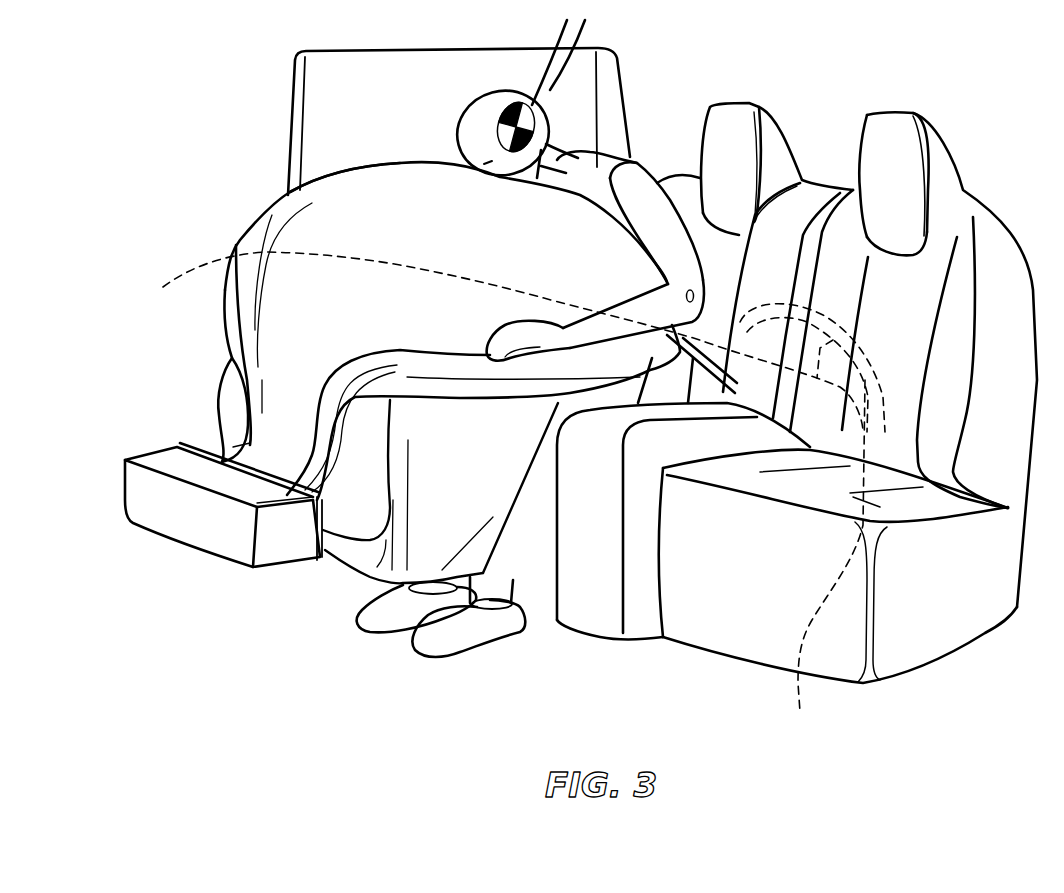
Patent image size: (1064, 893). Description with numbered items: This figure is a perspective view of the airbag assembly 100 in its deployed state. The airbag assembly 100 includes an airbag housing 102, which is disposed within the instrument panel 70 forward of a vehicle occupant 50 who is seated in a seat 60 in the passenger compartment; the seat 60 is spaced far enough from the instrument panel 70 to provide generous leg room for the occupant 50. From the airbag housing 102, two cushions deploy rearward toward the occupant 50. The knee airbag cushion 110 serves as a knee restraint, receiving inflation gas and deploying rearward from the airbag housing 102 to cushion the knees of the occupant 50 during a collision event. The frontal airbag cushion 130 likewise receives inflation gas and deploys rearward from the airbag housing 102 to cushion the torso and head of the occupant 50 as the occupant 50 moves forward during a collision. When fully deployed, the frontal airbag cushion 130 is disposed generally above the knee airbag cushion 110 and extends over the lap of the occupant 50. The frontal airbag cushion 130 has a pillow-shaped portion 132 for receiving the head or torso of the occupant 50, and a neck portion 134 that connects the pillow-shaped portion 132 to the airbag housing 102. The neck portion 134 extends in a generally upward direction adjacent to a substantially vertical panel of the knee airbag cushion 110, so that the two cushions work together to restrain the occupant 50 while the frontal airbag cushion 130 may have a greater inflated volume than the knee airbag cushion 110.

The airbag assembly 100 is at (373, 345).
The frontal airbag cushion 130 is at (391, 317).
The pillow-shaped portion 132 is at (365, 174).
The neck portion 134 is at (270, 428).
The airbag housing 102 is at (208, 527).
The knee airbag cushion 110 is at (491, 472).
The vehicle occupant 50 is at (607, 167).
The seat 60 is at (748, 171).
The instrument panel 70 is at (799, 694).